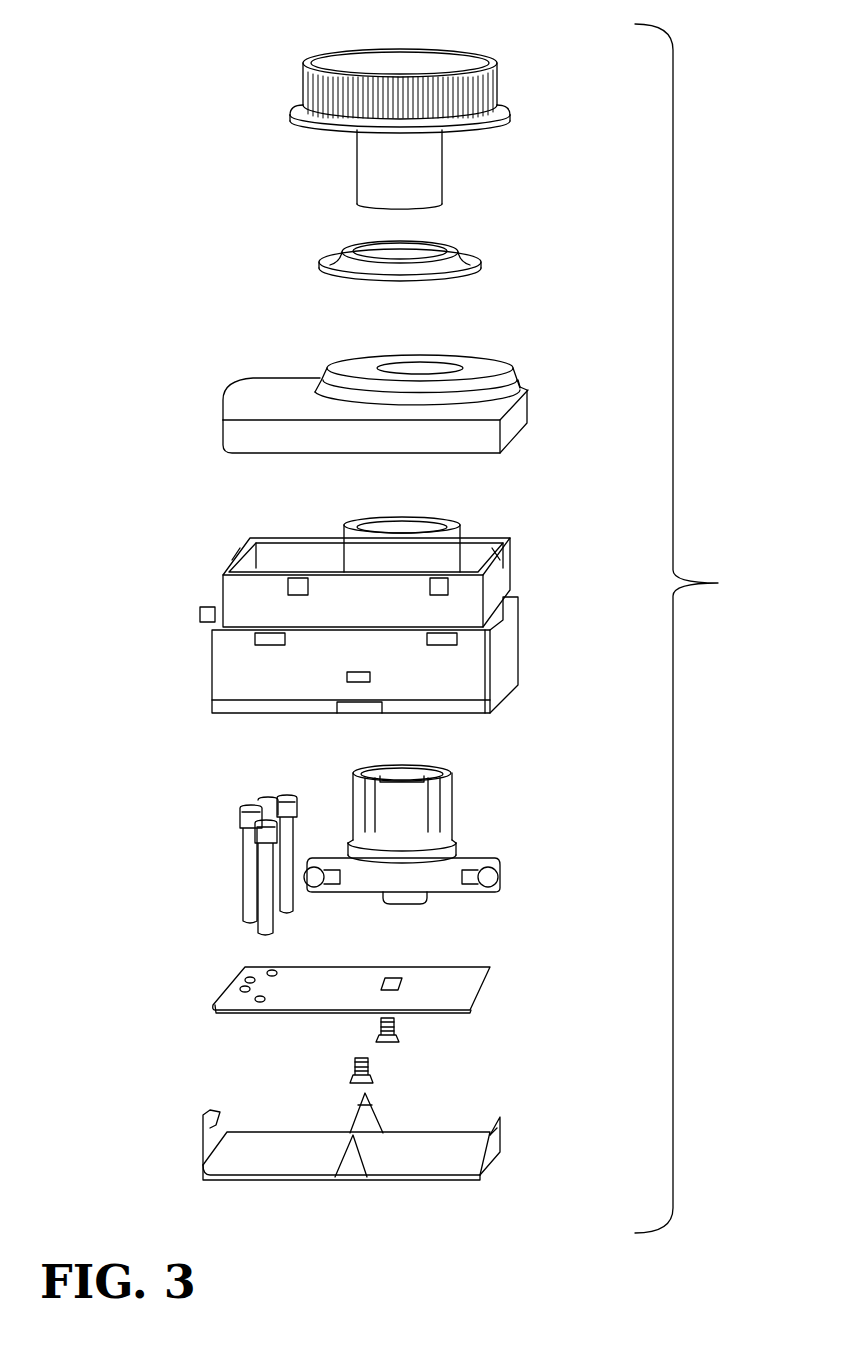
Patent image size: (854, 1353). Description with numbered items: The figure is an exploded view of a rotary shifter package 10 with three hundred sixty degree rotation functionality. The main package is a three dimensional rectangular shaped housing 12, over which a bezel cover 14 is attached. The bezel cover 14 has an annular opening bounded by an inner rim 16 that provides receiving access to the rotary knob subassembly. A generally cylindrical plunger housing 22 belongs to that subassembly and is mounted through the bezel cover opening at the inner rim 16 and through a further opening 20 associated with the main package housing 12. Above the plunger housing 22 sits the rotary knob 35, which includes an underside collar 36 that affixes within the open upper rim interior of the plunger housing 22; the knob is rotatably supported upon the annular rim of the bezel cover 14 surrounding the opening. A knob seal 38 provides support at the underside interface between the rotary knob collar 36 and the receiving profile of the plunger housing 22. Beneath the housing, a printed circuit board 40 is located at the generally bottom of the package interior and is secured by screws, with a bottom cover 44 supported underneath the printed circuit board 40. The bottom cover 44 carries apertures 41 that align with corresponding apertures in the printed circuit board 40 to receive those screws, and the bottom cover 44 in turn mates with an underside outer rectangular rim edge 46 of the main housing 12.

The rotary shifter package 10 is at (698, 628).
The main package housing 12 is at (510, 657).
The bezel cover 14 is at (297, 393).
The inner rim 16 is at (440, 370).
The opening 20 is at (417, 525).
The plunger housing 22 is at (447, 808).
The rotary knob 35 is at (370, 62).
The underside collar 36 is at (433, 163).
The knob seal 38 is at (330, 257).
The printed circuit board 40 is at (257, 1015).
The apertures 41 is at (372, 1068).
The bottom cover 44 is at (393, 1182).
The underside outer rectangular rim edge 46 is at (248, 715).